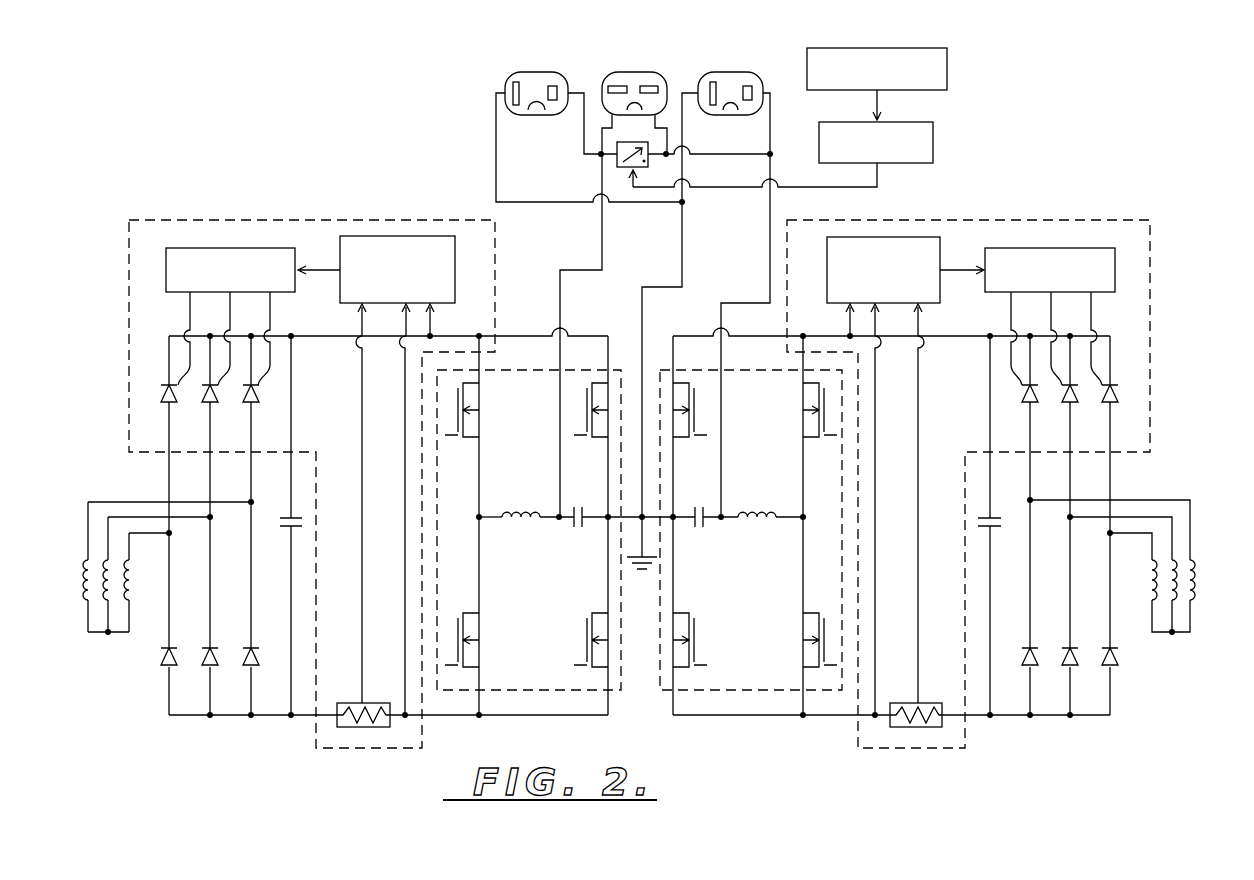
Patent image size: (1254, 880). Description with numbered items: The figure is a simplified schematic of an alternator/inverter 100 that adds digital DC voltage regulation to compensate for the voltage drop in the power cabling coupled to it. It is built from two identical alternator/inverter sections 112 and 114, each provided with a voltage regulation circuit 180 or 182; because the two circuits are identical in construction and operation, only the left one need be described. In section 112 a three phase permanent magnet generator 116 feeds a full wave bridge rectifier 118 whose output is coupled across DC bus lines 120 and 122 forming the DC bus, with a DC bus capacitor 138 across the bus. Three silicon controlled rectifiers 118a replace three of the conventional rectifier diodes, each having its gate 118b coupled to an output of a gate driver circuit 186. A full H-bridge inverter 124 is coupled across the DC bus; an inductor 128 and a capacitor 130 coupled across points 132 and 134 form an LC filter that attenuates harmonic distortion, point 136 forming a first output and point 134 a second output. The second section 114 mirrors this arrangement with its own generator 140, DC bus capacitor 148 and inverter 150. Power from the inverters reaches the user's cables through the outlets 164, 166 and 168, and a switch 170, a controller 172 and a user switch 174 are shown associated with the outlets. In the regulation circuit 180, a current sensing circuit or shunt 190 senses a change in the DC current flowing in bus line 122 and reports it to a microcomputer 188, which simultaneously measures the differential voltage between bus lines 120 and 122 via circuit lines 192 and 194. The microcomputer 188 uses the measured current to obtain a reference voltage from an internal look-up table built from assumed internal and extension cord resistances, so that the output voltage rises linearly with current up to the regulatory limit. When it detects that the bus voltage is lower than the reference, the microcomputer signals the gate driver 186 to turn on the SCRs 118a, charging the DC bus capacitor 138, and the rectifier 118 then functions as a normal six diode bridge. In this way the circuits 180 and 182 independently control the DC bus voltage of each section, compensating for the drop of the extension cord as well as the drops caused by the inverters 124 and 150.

The alternator/inverter 100 is at (240, 112).
The alternator/inverter section 112 is at (333, 186).
The alternator/inverter section 114 is at (1045, 192).
The three phase permanent magnet generator 116 is at (71, 581).
The rectifier 118 is at (146, 672).
The silicon controlled rectifiers 118a is at (163, 395).
The gate 118b is at (172, 383).
The DC bus line 120 is at (330, 338).
The DC bus line 122 is at (225, 718).
The inverter 124 is at (580, 365).
The inductor 128 is at (521, 527).
The capacitor 130 is at (585, 530).
The point 132 is at (481, 512).
The point 134 is at (605, 513).
The point 136 is at (557, 514).
The DC bus capacitor 138 is at (297, 527).
The second permanent magnet generator stator windings 140 is at (1216, 575).
The second DC bus capacitor 148 is at (986, 527).
The inverter 150 is at (695, 365).
The outlet 164 is at (510, 82).
The outlet 166 is at (760, 82).
The outlet 168 is at (607, 75).
The relay switch 170 is at (617, 160).
The controller 172 is at (935, 147).
The user switch 174 is at (948, 72).
The voltage regulation circuit 180 is at (157, 218).
The voltage regulation circuit 182 is at (1105, 220).
The gate driver circuit 186 is at (222, 248).
The microcomputer 188 is at (437, 237).
The current sensing circuit 190 is at (337, 727).
The circuit line 192 is at (404, 540).
The circuit line 194 is at (434, 318).